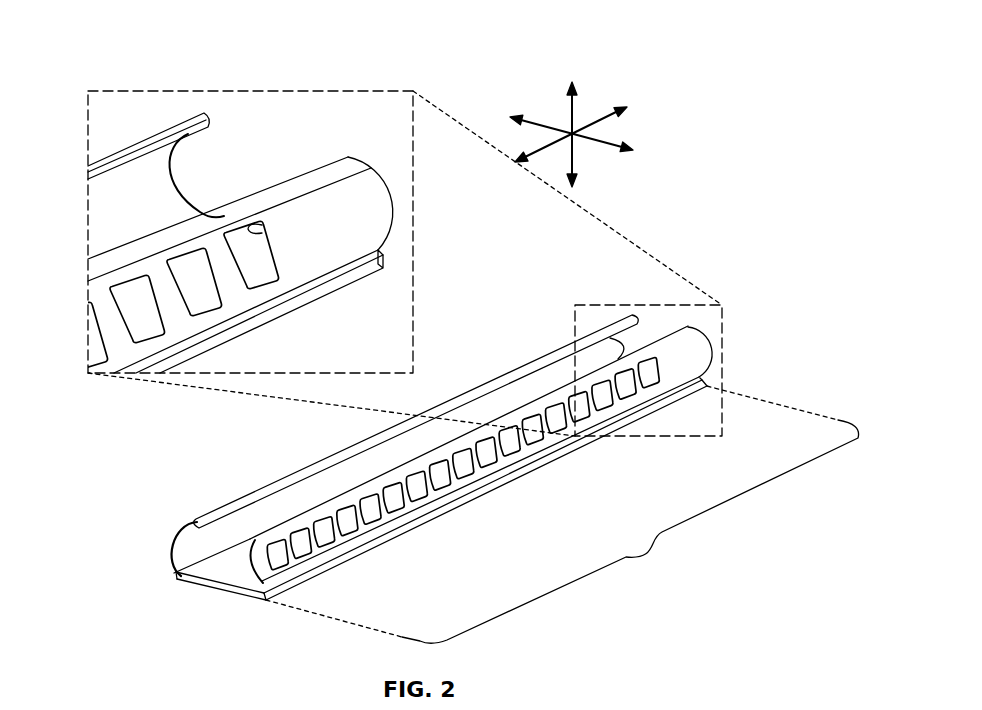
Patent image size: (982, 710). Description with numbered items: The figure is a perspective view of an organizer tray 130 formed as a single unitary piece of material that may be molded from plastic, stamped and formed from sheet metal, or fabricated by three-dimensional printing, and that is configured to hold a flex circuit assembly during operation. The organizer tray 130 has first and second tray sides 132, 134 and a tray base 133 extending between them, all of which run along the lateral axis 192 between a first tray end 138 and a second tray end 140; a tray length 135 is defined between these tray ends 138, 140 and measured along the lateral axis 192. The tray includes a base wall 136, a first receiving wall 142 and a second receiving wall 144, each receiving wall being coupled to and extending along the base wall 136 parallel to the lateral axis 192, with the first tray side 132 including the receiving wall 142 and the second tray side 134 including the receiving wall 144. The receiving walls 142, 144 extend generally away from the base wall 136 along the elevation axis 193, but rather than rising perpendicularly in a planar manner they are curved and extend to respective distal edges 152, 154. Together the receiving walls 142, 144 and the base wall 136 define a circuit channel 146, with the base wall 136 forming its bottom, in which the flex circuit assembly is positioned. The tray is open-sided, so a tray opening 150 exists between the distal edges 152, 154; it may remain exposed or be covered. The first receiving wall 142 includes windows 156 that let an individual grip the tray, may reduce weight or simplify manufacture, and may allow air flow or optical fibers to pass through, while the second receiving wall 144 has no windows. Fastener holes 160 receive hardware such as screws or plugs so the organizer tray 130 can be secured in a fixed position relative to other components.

The organizer tray 130 is at (607, 252).
The first tray side 132 is at (533, 483).
The tray base 133 is at (230, 591).
The second tray side 134 is at (295, 465).
The tray length 135 is at (649, 558).
The base wall 136 is at (174, 573).
The first tray end 138 is at (164, 591).
The second tray end 140 is at (718, 330).
The first receiving wall 142 is at (680, 370).
The second receiving wall 144 is at (173, 547).
The circuit channel 146 is at (476, 413).
The tray opening 150 is at (255, 547).
The distal edge 152 is at (672, 334).
The distal edge 154 is at (639, 317).
The windows 156 is at (409, 506).
The fastener holes 160 is at (228, 578).
The lateral axis 192 is at (588, 121).
The elevation axis 193 is at (566, 112).